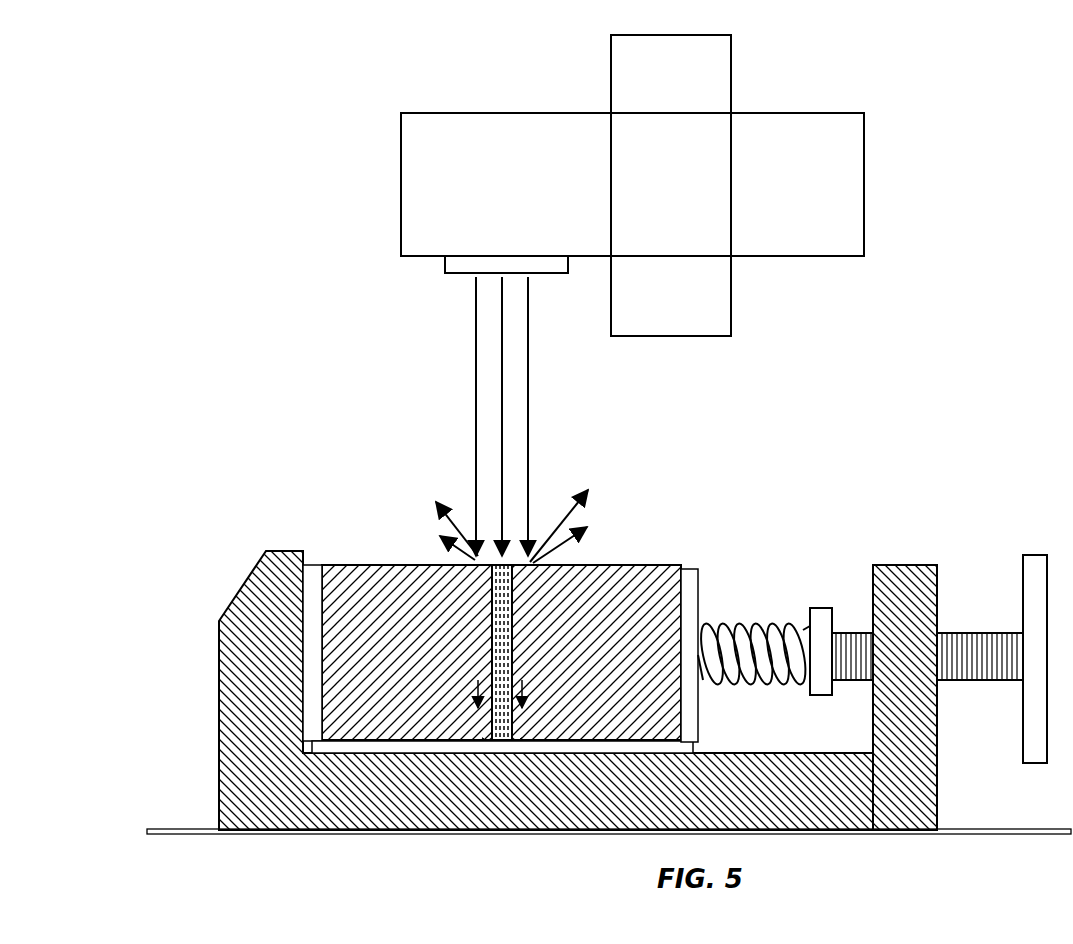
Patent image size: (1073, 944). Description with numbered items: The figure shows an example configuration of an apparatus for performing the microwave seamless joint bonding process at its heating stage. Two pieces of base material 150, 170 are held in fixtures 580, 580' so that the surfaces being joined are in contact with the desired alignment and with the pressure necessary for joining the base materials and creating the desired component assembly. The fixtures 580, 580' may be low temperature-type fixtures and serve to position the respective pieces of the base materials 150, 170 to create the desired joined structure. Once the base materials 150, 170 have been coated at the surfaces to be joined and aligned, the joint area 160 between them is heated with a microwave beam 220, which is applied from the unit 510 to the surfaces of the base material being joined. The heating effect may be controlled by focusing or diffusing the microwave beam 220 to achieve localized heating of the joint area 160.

The laser head 510 is at (401, 187).
The microwave beam 220 is at (530, 447).
The joint area 160 is at (492, 605).
The base material 150 is at (413, 565).
The base material 170 is at (633, 565).
The fixture 580 is at (609, 692).
The fixture 580' is at (675, 703).